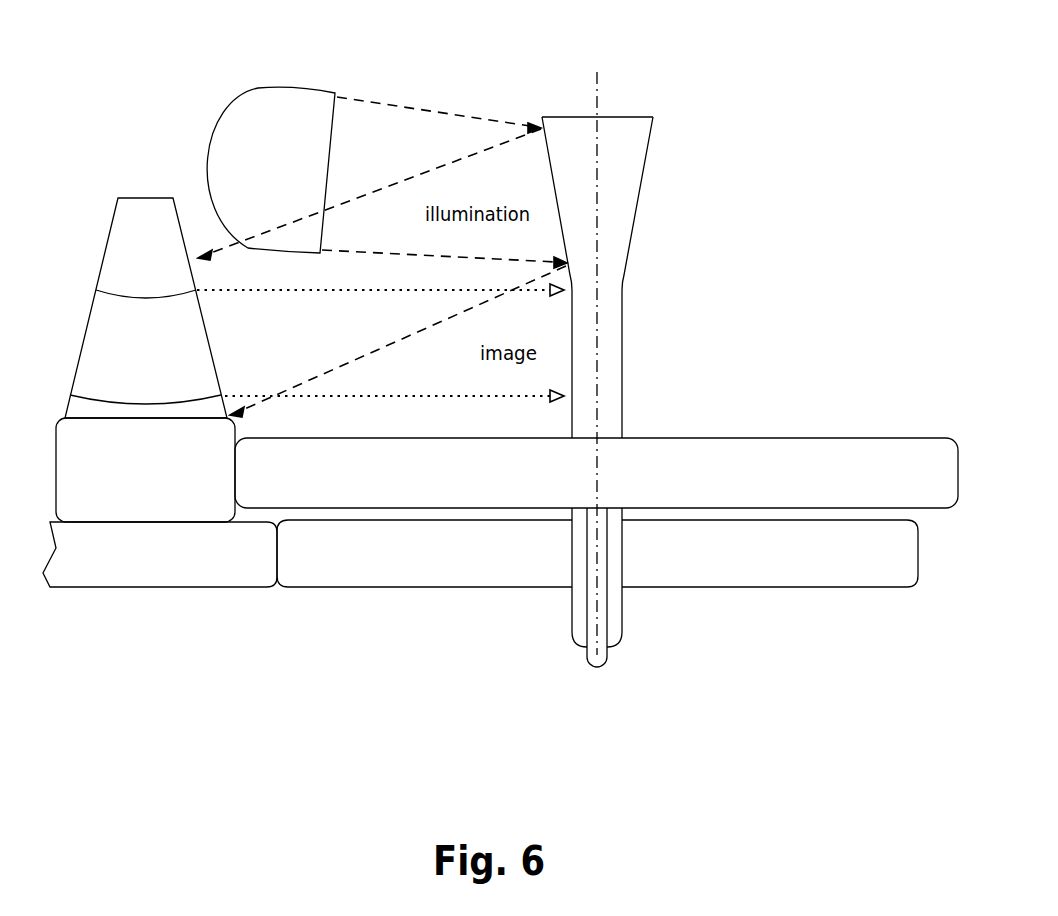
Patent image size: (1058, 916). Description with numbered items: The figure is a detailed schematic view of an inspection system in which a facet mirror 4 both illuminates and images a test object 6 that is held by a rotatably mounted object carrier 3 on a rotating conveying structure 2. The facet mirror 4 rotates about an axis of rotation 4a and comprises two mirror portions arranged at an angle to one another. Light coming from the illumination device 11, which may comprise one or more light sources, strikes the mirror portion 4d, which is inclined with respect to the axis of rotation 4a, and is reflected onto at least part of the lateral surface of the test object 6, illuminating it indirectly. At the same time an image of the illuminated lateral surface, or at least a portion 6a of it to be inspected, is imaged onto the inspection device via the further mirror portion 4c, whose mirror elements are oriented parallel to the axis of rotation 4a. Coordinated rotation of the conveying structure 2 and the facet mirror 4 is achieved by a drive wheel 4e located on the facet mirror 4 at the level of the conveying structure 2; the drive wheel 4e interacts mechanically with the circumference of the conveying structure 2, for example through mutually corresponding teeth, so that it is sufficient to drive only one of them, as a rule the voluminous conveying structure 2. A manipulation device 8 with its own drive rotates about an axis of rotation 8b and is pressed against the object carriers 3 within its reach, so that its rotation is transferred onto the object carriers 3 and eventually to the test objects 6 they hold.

The conveying structure 2 is at (147, 569).
The object carrier 3 is at (137, 485).
The facet mirror 4 is at (632, 242).
The axis of rotation 4a is at (597, 345).
The mirror portion 4c is at (622, 377).
The mirror portion 4d is at (643, 185).
The drive wheel 4e is at (783, 567).
The test object 6 is at (142, 255).
The portion of the lateral surface 6a is at (133, 364).
The manipulation device 8 is at (787, 485).
The axis of rotation 8b is at (597, 668).
The illumination device 11 is at (257, 182).